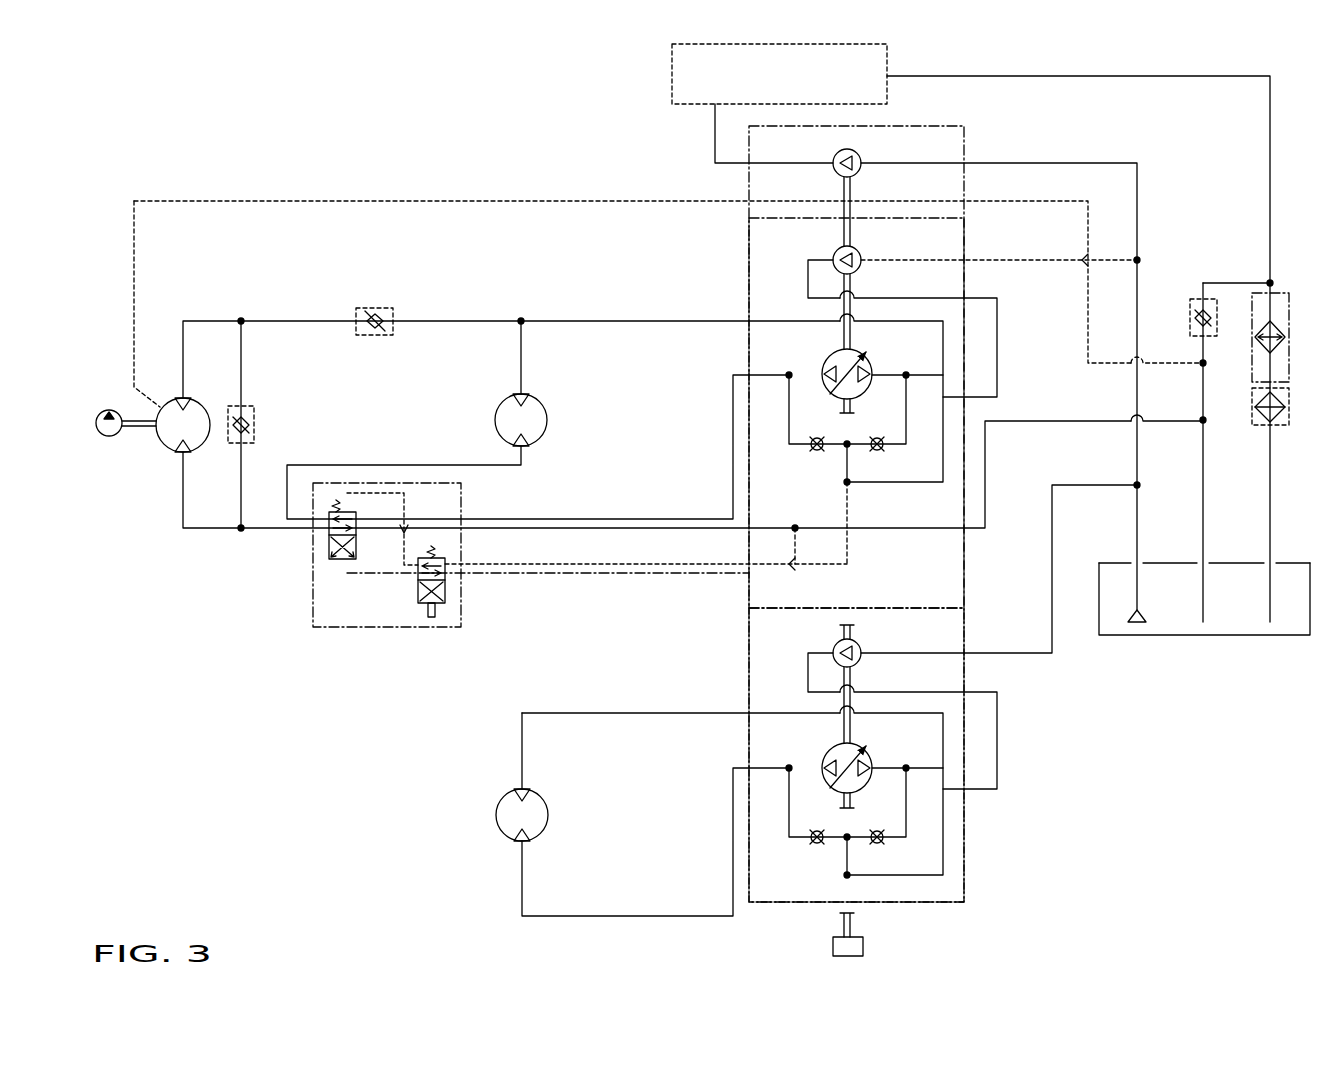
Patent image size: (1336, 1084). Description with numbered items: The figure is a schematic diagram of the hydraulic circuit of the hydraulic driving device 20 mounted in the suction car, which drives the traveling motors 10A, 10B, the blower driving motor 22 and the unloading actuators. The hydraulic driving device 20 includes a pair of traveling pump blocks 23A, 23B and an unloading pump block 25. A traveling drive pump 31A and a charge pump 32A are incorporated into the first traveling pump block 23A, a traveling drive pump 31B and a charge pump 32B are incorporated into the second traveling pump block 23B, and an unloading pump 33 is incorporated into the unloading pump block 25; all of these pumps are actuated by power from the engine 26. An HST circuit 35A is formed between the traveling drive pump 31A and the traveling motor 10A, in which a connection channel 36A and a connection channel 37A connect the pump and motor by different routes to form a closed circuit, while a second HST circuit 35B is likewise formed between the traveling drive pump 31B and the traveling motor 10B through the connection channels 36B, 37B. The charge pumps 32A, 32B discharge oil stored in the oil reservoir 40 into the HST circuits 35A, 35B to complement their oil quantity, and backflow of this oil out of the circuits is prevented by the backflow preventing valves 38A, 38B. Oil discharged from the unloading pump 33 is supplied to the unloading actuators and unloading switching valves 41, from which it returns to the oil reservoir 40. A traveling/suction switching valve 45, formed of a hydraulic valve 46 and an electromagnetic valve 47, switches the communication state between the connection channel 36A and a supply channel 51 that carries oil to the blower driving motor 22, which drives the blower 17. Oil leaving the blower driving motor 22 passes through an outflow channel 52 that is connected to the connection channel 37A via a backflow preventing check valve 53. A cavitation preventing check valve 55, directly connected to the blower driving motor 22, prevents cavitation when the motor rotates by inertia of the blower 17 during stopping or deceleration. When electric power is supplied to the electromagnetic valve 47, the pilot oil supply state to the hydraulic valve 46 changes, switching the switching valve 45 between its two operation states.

The hydraulic driving device 20 is at (375, 88).
The unloading actuators and unloading switching valves 41 is at (672, 76).
The blower 17 is at (109, 437).
The blower driving motor 22 is at (198, 402).
The outflow channel 52 is at (293, 321).
The backflow preventing check valve 53 is at (375, 308).
The cavitation preventing check valve 55 is at (256, 425).
The supply channel 51 is at (262, 530).
The traveling motor 10A is at (548, 420).
The traveling motor 10B is at (549, 815).
The HST circuit 35A is at (674, 310).
The HST circuit 35B is at (674, 702).
The connection channel 37A is at (648, 321).
The connection channel 36A is at (650, 518).
The connection channel 37B is at (650, 721).
The connection channel 36B is at (652, 917).
The switching valve 45 is at (366, 630).
The hydraulic valve 46 is at (340, 560).
The electromagnetic valve 47 is at (440, 604).
The unloading pump block 25 is at (968, 124).
The traveling pump block 23A is at (747, 590).
The traveling pump block 23B is at (968, 862).
The unloading pump 33 is at (862, 162).
The charge pump 32A is at (862, 259).
The charge pump 32B is at (862, 652).
The traveling drive pump 31A is at (872, 370).
The traveling drive pump 31B is at (872, 764).
The backflow preventing valves 38A is at (876, 450).
The backflow preventing valves 38B is at (876, 844).
The engine 26 is at (866, 945).
The oil reservoir 40 is at (1215, 637).